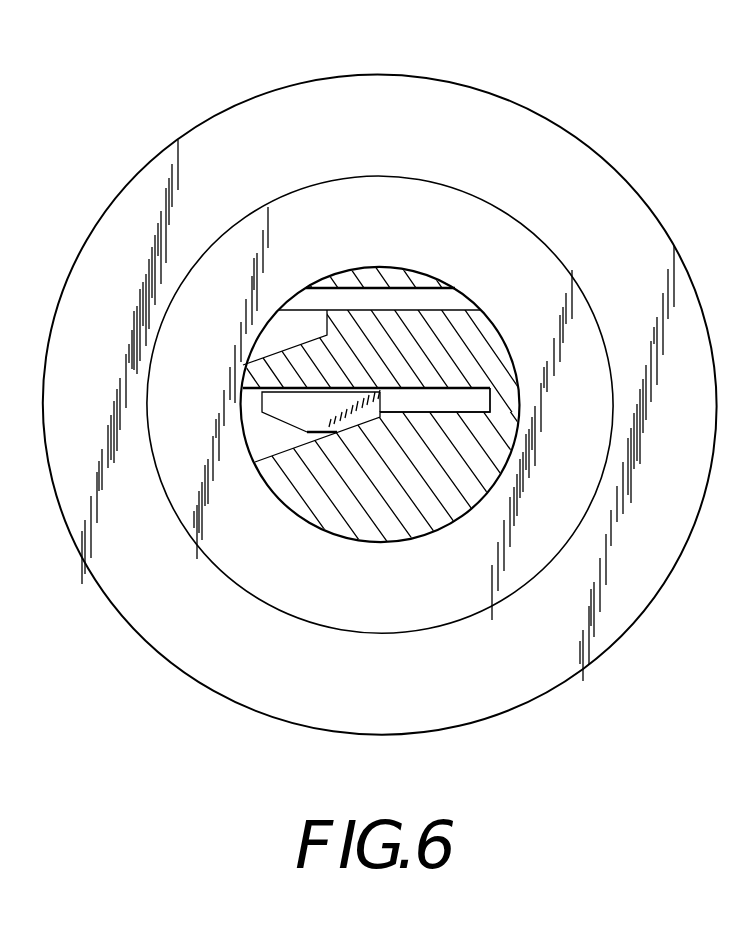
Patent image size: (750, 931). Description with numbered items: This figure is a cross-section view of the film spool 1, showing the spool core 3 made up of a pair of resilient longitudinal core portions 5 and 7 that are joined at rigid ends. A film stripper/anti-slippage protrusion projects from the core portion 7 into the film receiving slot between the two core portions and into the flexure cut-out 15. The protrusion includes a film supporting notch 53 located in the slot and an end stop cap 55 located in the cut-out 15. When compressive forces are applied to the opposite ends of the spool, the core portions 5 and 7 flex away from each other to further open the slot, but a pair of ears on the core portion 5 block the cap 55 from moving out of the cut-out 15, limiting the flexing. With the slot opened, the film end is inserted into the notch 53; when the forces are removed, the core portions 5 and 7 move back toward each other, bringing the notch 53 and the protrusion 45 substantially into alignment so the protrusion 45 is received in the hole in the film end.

The film spool 1 is at (167, 109).
The spool core 3 is at (386, 248).
The core portion 5 is at (361, 267).
The core portion 7 is at (357, 545).
The flexure cut-out 15 is at (323, 298).
The protrusion 45 is at (268, 420).
The film supporting notch 53 is at (486, 399).
The end stop cap 55 is at (414, 310).